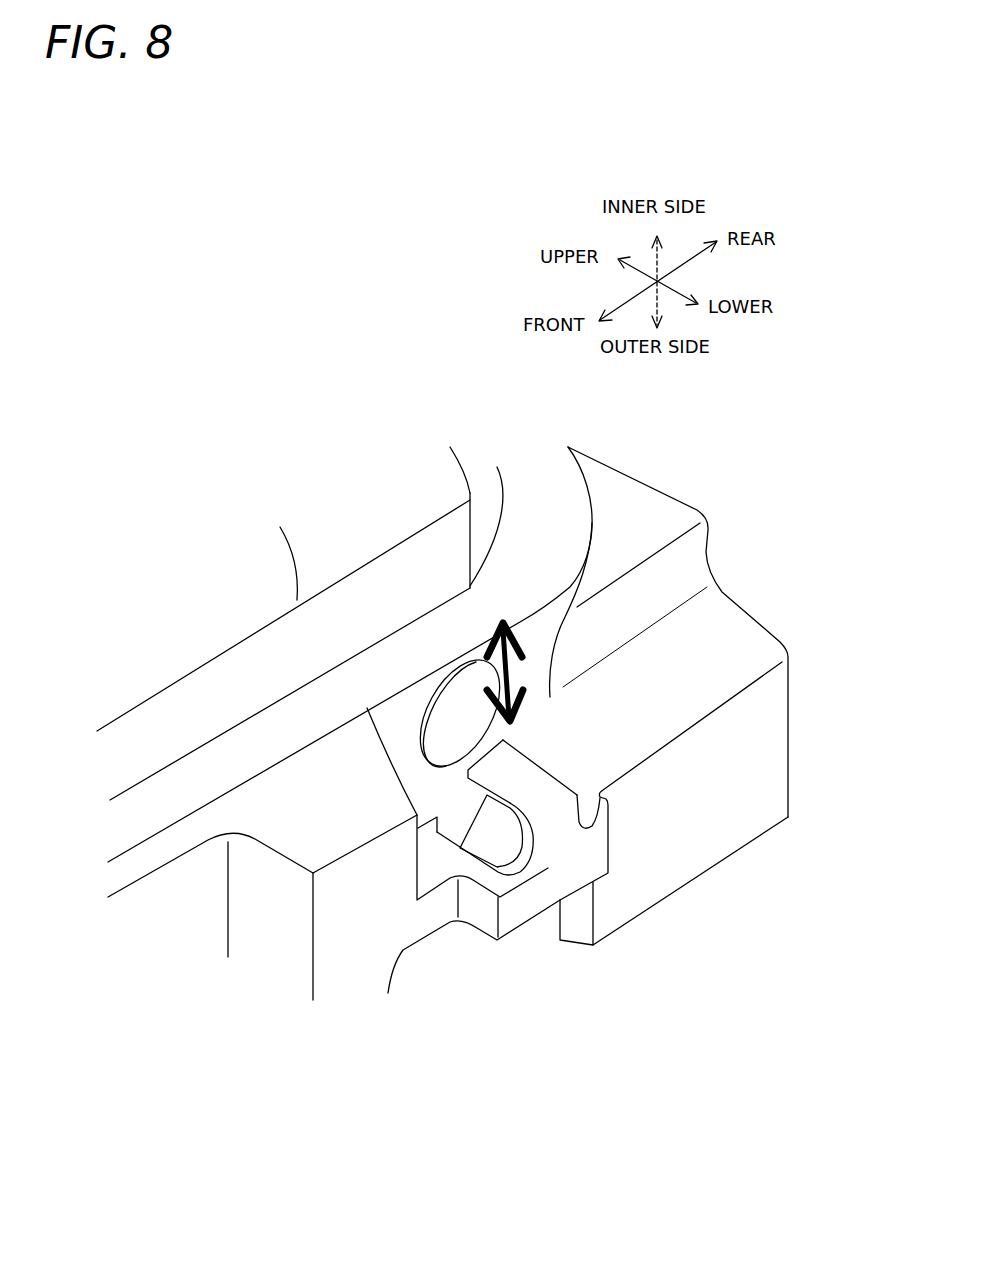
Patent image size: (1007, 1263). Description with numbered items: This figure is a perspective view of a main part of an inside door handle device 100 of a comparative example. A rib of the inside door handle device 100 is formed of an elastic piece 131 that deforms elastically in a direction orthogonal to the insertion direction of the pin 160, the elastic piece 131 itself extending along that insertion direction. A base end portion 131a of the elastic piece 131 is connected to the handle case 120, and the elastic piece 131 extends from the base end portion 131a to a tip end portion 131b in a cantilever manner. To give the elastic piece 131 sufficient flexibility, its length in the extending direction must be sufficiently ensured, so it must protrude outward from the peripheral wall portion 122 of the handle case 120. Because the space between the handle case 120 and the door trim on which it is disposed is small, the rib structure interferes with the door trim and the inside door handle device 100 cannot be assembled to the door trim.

The inside door handle device 100 is at (593, 992).
The handle case 120 is at (752, 583).
The peripheral wall portion 122 is at (397, 937).
The elastic piece 131 is at (504, 817).
The base end portion 131a is at (557, 832).
The tip end portion 131b is at (497, 753).
The pin 160 is at (462, 703).